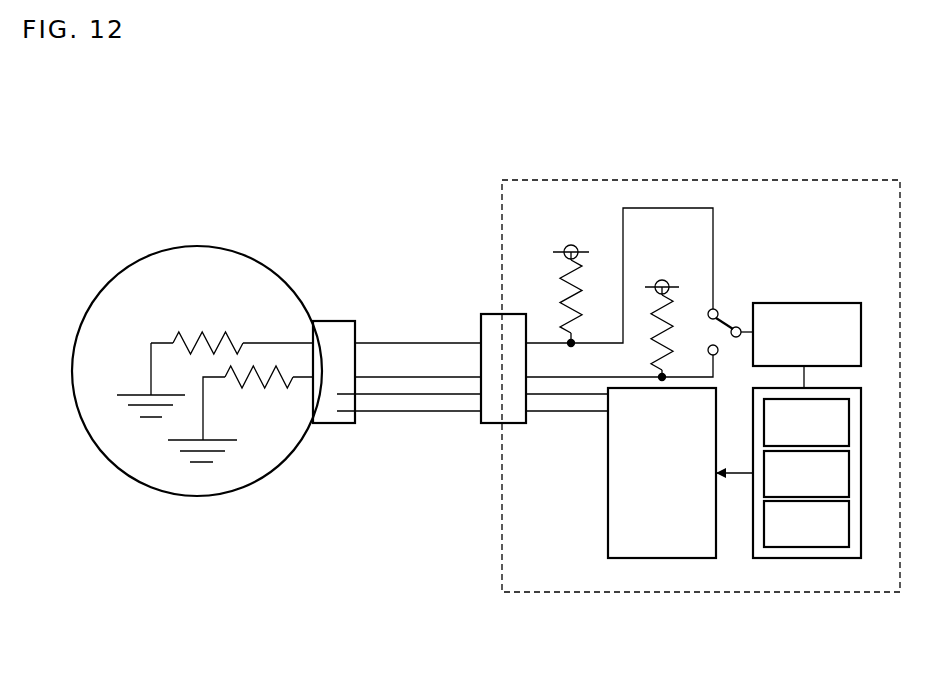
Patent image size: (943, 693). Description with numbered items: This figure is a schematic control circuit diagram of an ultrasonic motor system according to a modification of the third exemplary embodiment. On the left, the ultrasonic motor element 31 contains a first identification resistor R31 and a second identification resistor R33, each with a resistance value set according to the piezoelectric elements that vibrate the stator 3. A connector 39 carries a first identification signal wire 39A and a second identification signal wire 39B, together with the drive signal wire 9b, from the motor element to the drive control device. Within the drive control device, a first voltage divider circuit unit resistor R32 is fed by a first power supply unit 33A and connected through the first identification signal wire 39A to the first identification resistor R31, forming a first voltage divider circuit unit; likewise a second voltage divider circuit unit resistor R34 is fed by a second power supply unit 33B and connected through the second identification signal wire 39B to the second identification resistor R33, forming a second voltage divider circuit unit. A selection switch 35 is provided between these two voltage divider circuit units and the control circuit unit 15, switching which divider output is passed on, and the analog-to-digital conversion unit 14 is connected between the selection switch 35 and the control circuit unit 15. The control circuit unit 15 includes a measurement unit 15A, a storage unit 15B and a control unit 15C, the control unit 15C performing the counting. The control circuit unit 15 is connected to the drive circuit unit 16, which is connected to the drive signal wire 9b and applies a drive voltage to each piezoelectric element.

The stator 3 is at (267, 280).
The ultrasonic motor element 31 is at (143, 247).
The first identification resistor R31 is at (223, 333).
The second identification resistor R33 is at (270, 388).
The connector 39 is at (329, 312).
The first identification signal wire 39A is at (380, 343).
The second identification signal wire 39B is at (437, 377).
The drive signal wire 9b is at (377, 394).
The first voltage divider circuit unit resistor R32 is at (563, 283).
The second voltage divider circuit unit resistor R34 is at (654, 316).
The first power supply unit 33A is at (571, 245).
The second power supply unit 33B is at (667, 280).
The selection switch 35 is at (738, 320).
The analog-to-digital conversion unit 14 is at (852, 303).
The drive circuit unit 16 is at (667, 547).
The control circuit unit 15 is at (840, 566).
The measurement unit 15A is at (843, 440).
The storage unit 15B is at (769, 490).
The control unit 15C is at (795, 541).